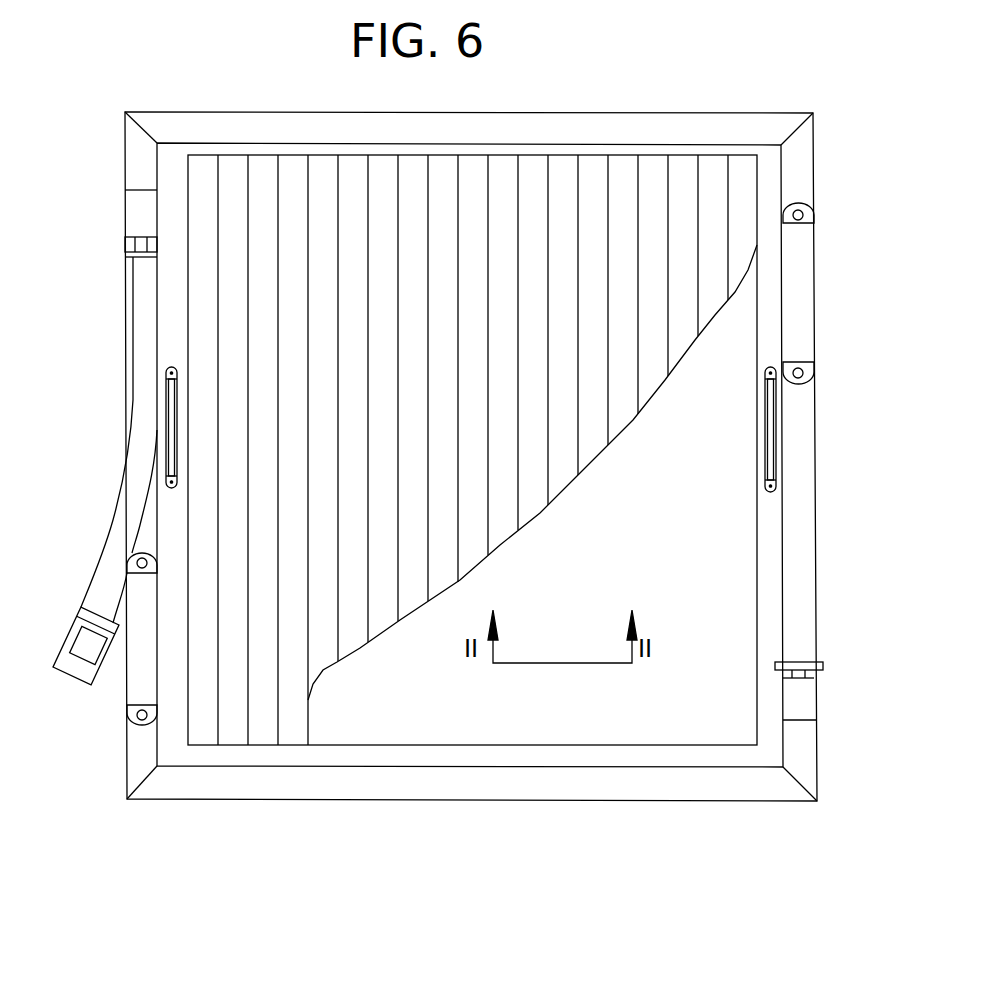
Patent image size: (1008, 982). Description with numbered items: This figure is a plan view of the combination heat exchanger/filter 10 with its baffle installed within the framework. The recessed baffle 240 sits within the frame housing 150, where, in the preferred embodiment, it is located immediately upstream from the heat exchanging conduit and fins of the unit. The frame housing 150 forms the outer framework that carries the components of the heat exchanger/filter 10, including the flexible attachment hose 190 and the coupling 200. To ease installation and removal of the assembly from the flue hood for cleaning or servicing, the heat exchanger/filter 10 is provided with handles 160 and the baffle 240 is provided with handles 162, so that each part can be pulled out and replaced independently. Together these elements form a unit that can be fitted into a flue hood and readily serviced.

The heat exchanger/filter 10 is at (513, 800).
The frame housing 150 is at (765, 125).
The handle 160 is at (813, 285).
The handle 162 is at (777, 430).
The flexible attachment hose 190 is at (136, 412).
The coupling 200 is at (73, 638).
The recessed baffle 240 is at (762, 208).